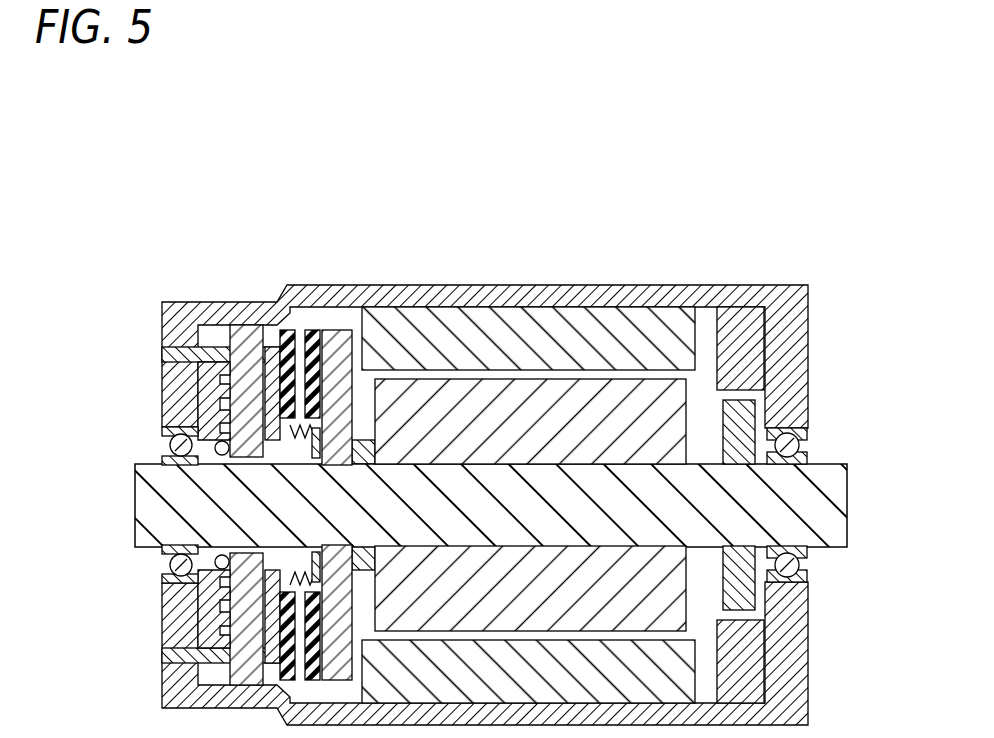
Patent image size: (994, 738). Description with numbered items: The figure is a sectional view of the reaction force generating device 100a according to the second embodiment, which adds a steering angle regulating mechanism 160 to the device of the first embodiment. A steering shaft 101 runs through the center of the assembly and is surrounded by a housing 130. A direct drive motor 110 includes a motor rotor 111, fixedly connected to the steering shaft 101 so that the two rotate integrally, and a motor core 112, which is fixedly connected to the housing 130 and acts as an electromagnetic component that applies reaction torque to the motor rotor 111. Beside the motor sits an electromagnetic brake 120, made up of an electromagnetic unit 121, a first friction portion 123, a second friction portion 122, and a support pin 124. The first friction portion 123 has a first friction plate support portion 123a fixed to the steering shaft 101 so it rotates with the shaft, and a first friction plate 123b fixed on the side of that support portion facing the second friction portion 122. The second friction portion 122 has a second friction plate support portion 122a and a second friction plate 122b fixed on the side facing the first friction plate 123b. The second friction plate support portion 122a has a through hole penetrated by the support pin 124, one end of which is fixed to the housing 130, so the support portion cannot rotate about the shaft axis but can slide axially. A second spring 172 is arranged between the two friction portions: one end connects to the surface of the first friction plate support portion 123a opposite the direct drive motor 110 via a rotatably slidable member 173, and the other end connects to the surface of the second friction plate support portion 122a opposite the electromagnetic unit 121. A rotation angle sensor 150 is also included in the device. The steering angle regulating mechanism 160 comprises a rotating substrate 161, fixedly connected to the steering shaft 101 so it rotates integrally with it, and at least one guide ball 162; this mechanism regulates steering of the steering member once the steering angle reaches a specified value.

The reaction force generating device 100a is at (803, 185).
The steering shaft 101 is at (823, 487).
The direct drive motor 110 is at (528, 449).
The motor rotor 111 is at (483, 342).
The motor core 112 is at (430, 420).
The electromagnetic brake 120 is at (130, 82).
The electromagnetic unit 121 is at (247, 383).
The second friction portion 122 is at (185, 148).
The second friction plate support portion 122a is at (267, 380).
The second friction plate 122b is at (290, 383).
The first friction portion 123 is at (185, 72).
The first friction plate support portion 123a is at (337, 347).
The first friction plate 123b is at (310, 335).
The support pin 124 is at (218, 352).
The housing 130 is at (790, 355).
The rotation angle sensor 150 is at (743, 400).
The steering angle regulating mechanism 160 is at (83, 322).
The rotating substrate 161 is at (207, 428).
The guide ball 162 is at (215, 447).
The second spring 172 is at (317, 420).
The rotatably slidable member 173 is at (320, 440).